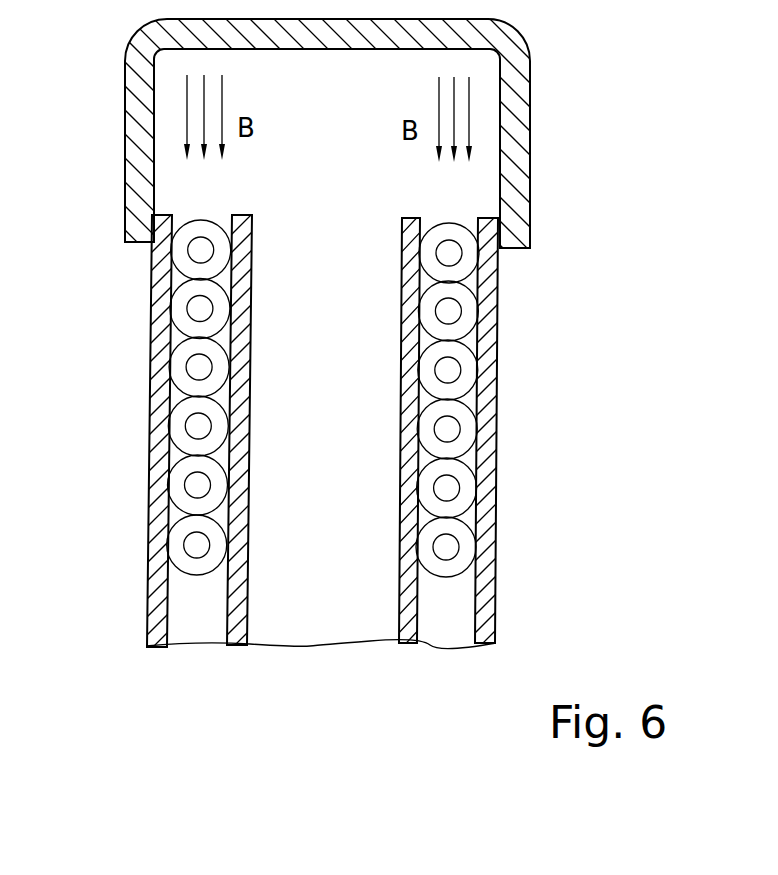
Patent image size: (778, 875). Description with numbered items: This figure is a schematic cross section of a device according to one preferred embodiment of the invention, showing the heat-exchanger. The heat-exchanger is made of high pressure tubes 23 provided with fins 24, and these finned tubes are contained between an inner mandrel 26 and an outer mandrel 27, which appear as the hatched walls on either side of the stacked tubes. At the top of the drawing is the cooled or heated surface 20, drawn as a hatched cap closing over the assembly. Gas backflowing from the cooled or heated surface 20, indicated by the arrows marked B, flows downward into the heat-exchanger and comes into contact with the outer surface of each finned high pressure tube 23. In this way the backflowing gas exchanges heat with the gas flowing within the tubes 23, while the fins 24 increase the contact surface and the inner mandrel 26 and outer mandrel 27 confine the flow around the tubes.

The cooled or heated surface 20 is at (143, 45).
The high pressure tube 23 is at (195, 426).
The fin 24 is at (183, 560).
The inner mandrel 26 is at (247, 567).
The outer mandrel 27 is at (151, 297).